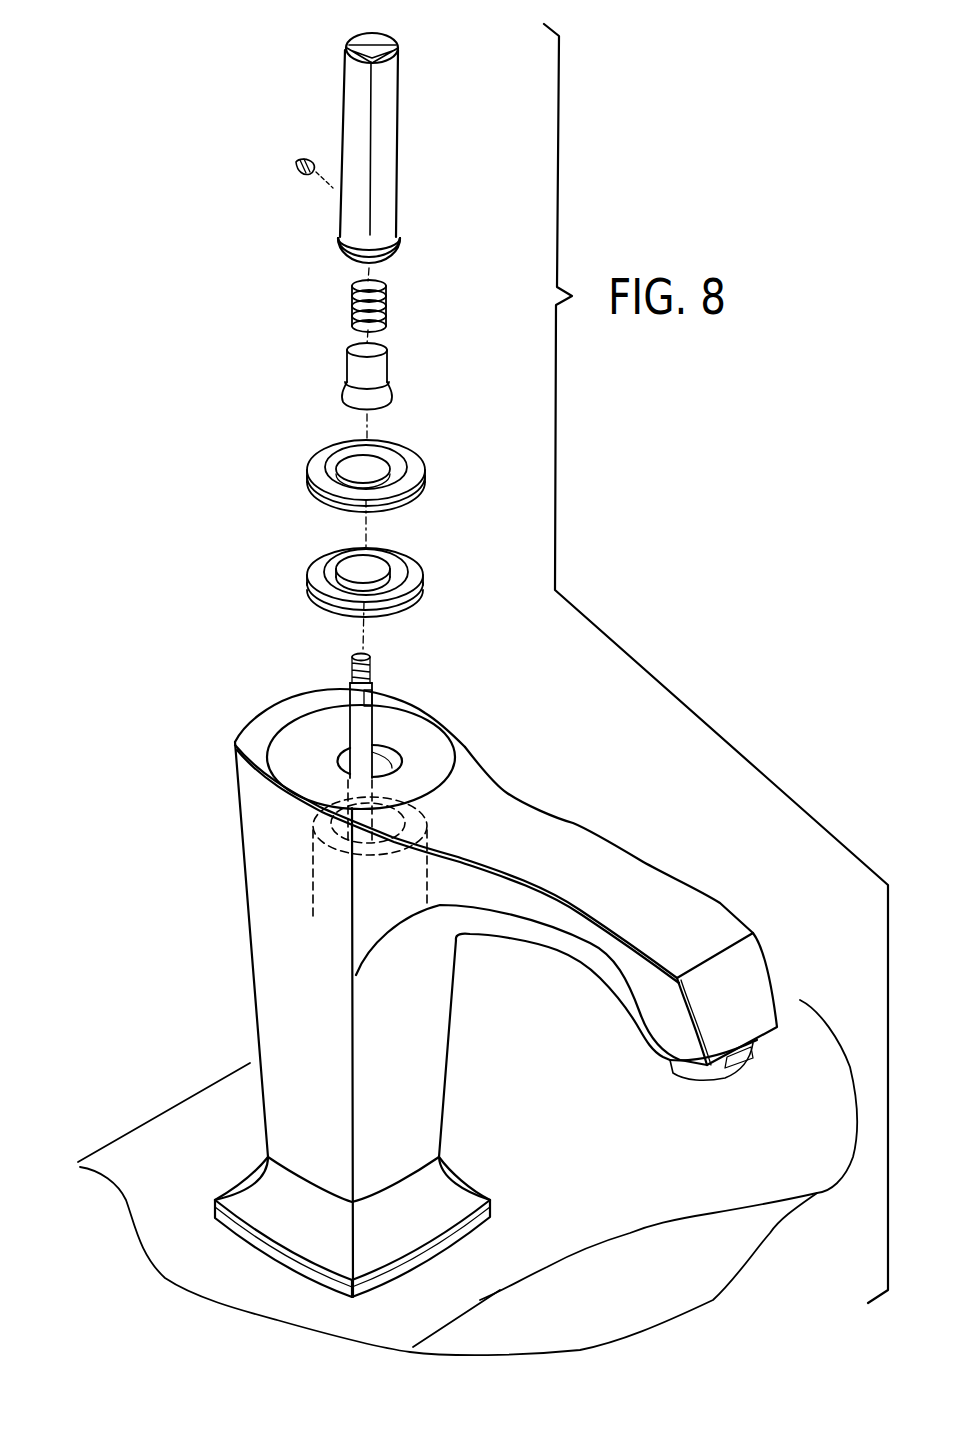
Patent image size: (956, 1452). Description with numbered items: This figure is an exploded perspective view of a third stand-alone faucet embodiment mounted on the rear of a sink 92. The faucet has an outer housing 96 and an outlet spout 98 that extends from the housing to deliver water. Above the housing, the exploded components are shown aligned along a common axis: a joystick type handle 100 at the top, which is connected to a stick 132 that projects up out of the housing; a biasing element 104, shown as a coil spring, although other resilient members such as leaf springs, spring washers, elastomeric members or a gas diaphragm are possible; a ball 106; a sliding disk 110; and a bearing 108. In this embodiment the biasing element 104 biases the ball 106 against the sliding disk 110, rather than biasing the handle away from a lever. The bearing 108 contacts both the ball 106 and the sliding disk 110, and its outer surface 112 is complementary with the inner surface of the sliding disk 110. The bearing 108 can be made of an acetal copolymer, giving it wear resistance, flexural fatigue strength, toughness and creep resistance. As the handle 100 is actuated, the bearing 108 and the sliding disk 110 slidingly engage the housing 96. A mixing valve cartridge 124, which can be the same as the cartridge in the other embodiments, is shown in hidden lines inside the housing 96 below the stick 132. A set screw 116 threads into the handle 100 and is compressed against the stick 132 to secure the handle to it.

The sink 92 is at (730, 1262).
The outer housing 96 is at (268, 957).
The outlet spout 98 is at (683, 910).
The joystick type handle 100 is at (343, 85).
The biasing element 104 is at (390, 302).
The ball 106 is at (340, 398).
The bearing 108 is at (410, 600).
The sliding disk 110 is at (420, 490).
The outer surface 112 is at (410, 570).
The set screw 116 is at (292, 158).
The mixing valve cartridge 124 is at (313, 852).
The stick 132 is at (366, 728).